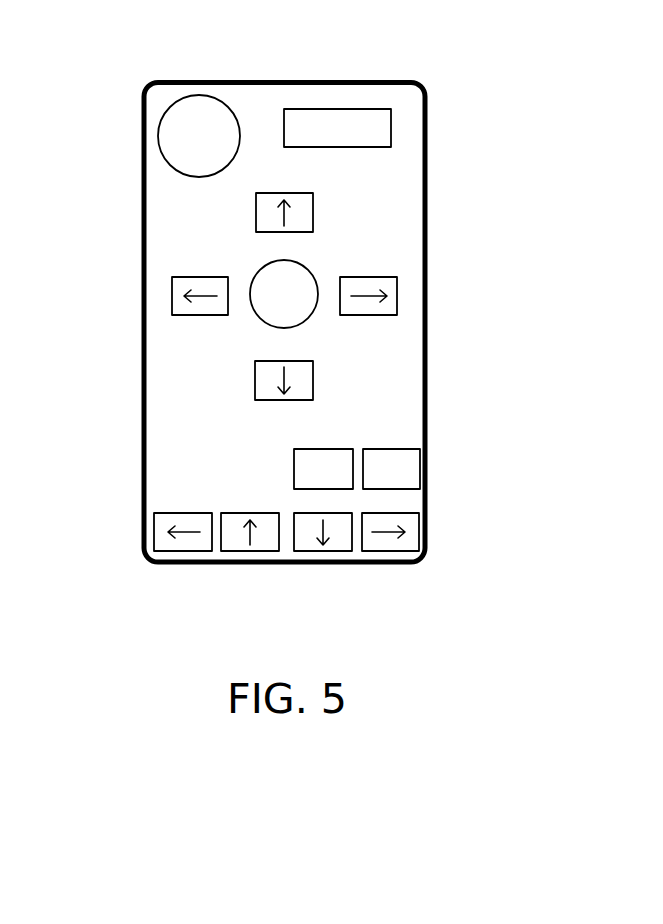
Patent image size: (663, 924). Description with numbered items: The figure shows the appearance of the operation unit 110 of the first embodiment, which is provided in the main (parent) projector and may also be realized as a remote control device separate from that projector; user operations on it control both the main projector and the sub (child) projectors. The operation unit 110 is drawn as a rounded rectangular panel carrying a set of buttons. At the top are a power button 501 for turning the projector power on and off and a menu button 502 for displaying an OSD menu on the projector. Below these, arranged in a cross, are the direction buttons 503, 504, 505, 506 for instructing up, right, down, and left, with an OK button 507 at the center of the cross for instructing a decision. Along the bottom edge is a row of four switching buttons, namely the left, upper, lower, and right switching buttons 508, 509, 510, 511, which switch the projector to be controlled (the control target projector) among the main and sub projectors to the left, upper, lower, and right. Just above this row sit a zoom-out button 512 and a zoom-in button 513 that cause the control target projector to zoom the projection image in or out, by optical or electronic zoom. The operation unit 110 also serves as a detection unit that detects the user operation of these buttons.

The operation unit 110 is at (141, 118).
The power button 501 is at (237, 108).
The menu button 502 is at (348, 108).
The direction button 503 is at (313, 212).
The direction button 504 is at (397, 296).
The direction button 505 is at (313, 383).
The direction button 506 is at (172, 296).
The OK button 507 is at (313, 277).
The left switching button 508 is at (178, 552).
The upper switching button 509 is at (248, 552).
The lower switching button 510 is at (318, 552).
The right switching button 511 is at (388, 552).
The zoom-out button 512 is at (340, 443).
The zoom-in button 513 is at (425, 478).